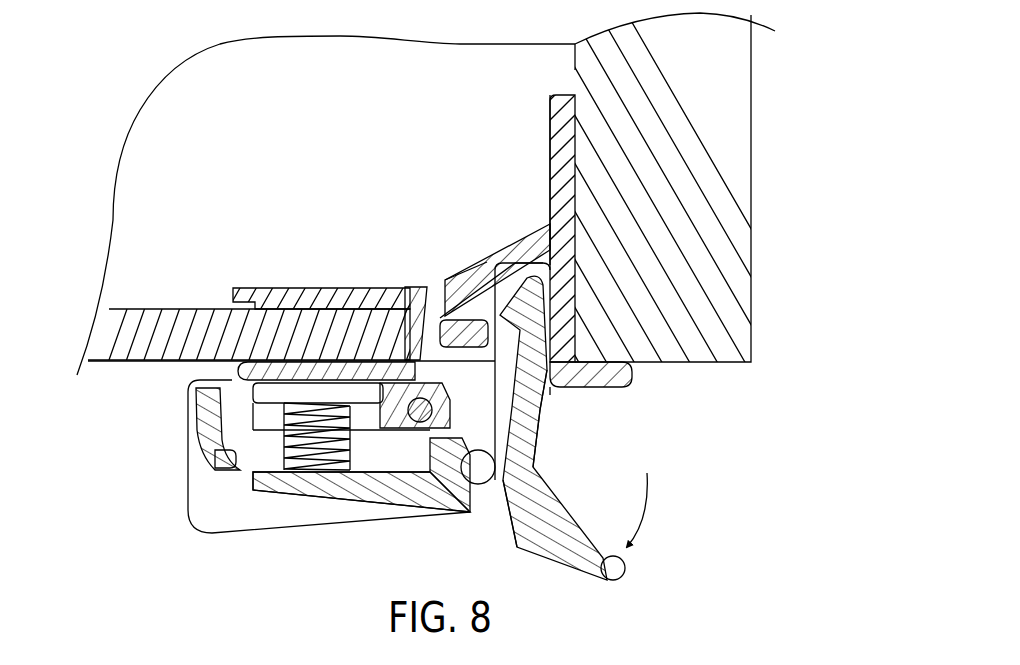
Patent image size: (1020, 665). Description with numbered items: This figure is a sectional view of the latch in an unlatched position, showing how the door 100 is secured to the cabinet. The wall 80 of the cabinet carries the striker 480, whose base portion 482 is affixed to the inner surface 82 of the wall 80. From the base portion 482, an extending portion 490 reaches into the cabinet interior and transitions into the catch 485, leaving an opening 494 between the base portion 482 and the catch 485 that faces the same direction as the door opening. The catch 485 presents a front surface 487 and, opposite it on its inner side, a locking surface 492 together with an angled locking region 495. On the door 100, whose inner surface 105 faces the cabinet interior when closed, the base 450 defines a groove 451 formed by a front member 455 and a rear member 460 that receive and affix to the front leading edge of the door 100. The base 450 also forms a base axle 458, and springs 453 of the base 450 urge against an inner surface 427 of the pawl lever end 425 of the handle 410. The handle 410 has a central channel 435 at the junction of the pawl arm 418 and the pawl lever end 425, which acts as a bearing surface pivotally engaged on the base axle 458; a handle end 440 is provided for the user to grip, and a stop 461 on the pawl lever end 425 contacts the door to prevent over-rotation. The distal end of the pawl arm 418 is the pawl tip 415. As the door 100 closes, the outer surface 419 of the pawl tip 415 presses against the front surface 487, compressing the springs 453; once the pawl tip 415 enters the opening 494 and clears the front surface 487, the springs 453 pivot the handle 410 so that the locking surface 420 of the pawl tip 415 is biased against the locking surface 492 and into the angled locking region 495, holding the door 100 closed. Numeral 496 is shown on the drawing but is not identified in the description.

The wall 80 is at (707, 127).
The inner surface 82 is at (573, 63).
The door 100 is at (157, 318).
The inner surface 105 is at (192, 308).
The handle 410 is at (500, 508).
The pawl tip 415 is at (598, 370).
The pawl arm 418 is at (520, 478).
The outer surface 419 is at (500, 258).
The locking surface 420 is at (455, 320).
The pawl lever end 425 is at (338, 490).
The inner surface 427 is at (225, 453).
The central channel 435 is at (470, 520).
The handle end 440 is at (590, 580).
The base 450 is at (220, 485).
The groove 451 is at (410, 298).
The springs 453 is at (282, 385).
The front member 455 is at (245, 372).
The base axle 458 is at (515, 490).
The rear member 460 is at (297, 300).
The stop 461 is at (205, 433).
The striker 480 is at (567, 120).
The base portion 482 is at (567, 150).
The catch 485 is at (447, 445).
The front surface 487 is at (513, 423).
The extending portion 490 is at (532, 250).
The locking surface 492 is at (490, 255).
The opening 494 is at (554, 396).
The angled locking region 495 is at (470, 318).
The slanted lip 496 is at (470, 253).